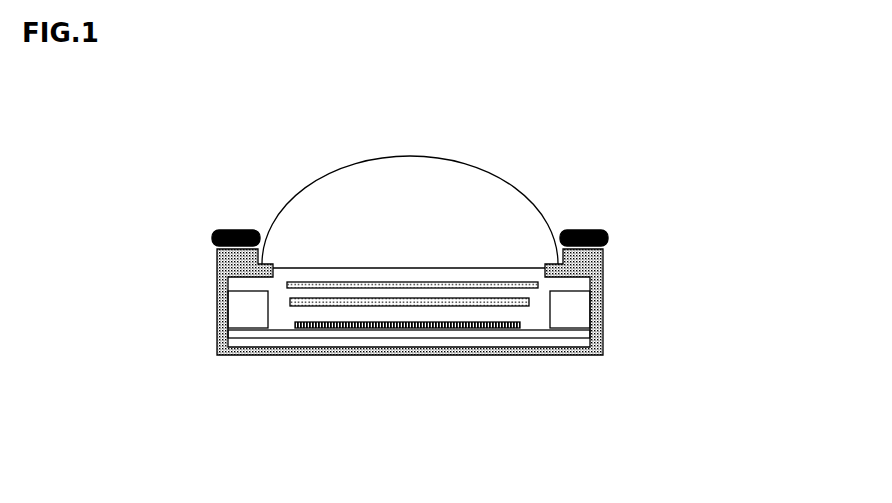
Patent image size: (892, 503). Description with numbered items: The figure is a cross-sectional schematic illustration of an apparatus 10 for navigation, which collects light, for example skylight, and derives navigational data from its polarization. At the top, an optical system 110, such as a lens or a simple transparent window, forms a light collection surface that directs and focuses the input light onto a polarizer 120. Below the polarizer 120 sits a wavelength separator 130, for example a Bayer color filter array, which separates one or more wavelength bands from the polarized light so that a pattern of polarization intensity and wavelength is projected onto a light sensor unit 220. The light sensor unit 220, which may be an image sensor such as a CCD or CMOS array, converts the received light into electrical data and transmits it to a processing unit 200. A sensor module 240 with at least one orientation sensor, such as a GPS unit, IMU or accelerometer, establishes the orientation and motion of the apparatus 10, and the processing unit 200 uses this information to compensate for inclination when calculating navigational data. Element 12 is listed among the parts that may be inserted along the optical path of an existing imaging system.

The apparatus 10 is at (596, 92).
The element 12 is at (398, 352).
The optical system 110 is at (346, 166).
The polarizer 120 is at (400, 285).
The wavelength separator 130 is at (452, 303).
The processing unit 200 is at (452, 340).
The light sensor unit 220 is at (507, 326).
The sensor module 240 is at (587, 312).